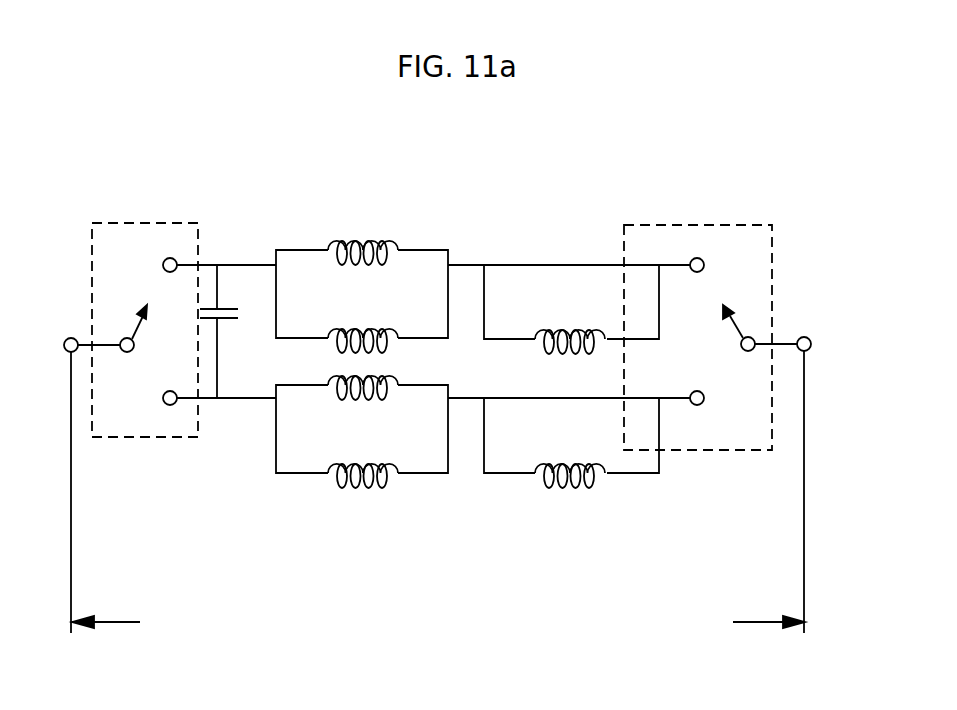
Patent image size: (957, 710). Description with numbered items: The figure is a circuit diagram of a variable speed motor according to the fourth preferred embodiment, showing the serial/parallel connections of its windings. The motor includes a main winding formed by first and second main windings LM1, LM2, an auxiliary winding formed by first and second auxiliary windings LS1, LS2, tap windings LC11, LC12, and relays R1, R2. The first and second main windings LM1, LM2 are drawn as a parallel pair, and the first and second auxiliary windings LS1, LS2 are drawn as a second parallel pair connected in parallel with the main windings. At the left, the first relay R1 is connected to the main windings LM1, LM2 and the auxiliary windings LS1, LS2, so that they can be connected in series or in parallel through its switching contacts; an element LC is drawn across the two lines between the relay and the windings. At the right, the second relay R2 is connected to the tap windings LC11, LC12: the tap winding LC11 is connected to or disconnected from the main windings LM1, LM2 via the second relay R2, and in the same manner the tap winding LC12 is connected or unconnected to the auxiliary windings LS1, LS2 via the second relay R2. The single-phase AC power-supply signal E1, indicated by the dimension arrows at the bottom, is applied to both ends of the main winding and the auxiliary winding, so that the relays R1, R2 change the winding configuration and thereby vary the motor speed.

The first relay R1 is at (147, 222).
The second relay R2 is at (723, 224).
The compensation capacitor Lc LC is at (229, 331).
The first main winding LM1 is at (363, 231).
The second main winding LM2 is at (363, 319).
The first auxiliary winding LS1 is at (363, 402).
The second auxiliary winding LS2 is at (363, 490).
The tap winding LC11 is at (571, 320).
The tap winding LC12 is at (571, 454).
The single-phase AC power-supply signal E1 is at (438, 617).